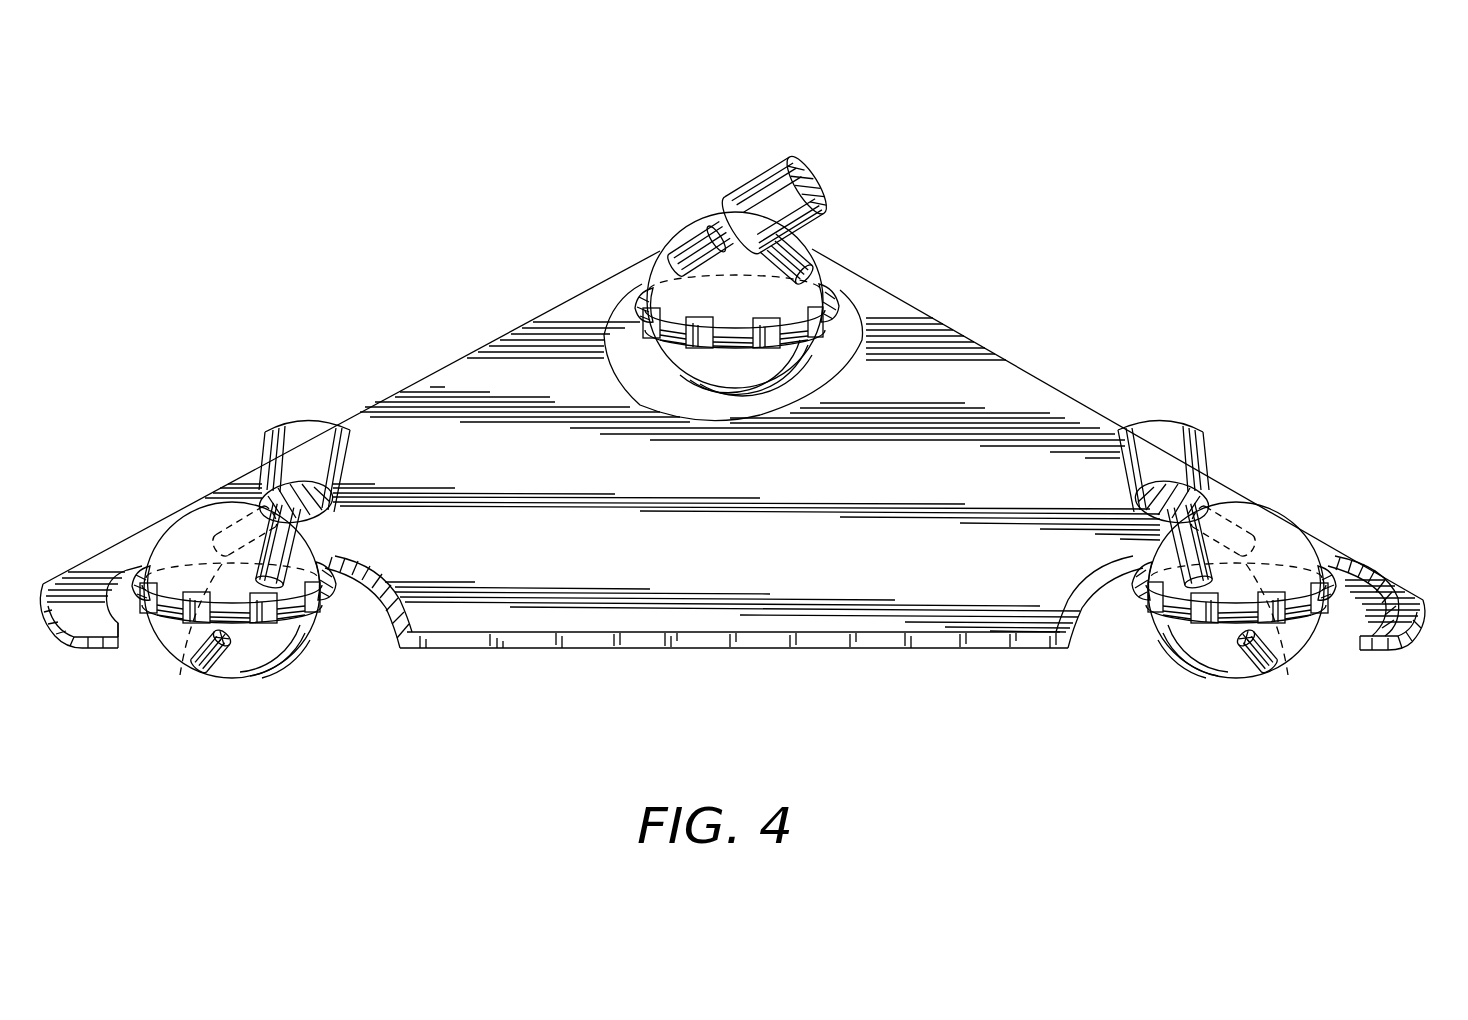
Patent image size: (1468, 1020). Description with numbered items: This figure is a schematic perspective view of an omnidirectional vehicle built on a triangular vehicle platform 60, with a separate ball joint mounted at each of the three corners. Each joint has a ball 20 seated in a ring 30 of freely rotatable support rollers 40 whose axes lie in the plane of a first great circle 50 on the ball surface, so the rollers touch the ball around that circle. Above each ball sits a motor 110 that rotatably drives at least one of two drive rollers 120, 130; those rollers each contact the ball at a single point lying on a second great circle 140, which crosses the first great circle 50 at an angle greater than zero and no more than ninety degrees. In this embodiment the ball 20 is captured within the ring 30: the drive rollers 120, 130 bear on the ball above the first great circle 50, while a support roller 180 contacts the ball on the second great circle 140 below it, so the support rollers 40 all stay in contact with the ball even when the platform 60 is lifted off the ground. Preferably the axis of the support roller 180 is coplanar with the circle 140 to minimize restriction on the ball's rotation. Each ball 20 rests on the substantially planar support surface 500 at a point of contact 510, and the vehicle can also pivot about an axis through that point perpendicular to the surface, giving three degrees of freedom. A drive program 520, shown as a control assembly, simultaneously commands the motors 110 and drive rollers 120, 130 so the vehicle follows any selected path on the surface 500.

The ball 20 is at (745, 448).
The ring 30 is at (725, 658).
The support rollers 40 is at (734, 479).
The first great circle 50 is at (741, 421).
The vehicle platform 60 is at (658, 622).
The motor 110 is at (744, 321).
The drive roller 120 is at (734, 382).
The drive roller 130 is at (727, 383).
The second great circle 140 is at (729, 689).
The support roller 180 is at (737, 686).
The support surface 500 is at (832, 722).
The point of contact 510 is at (736, 507).
The drive program 520 is at (717, 265).